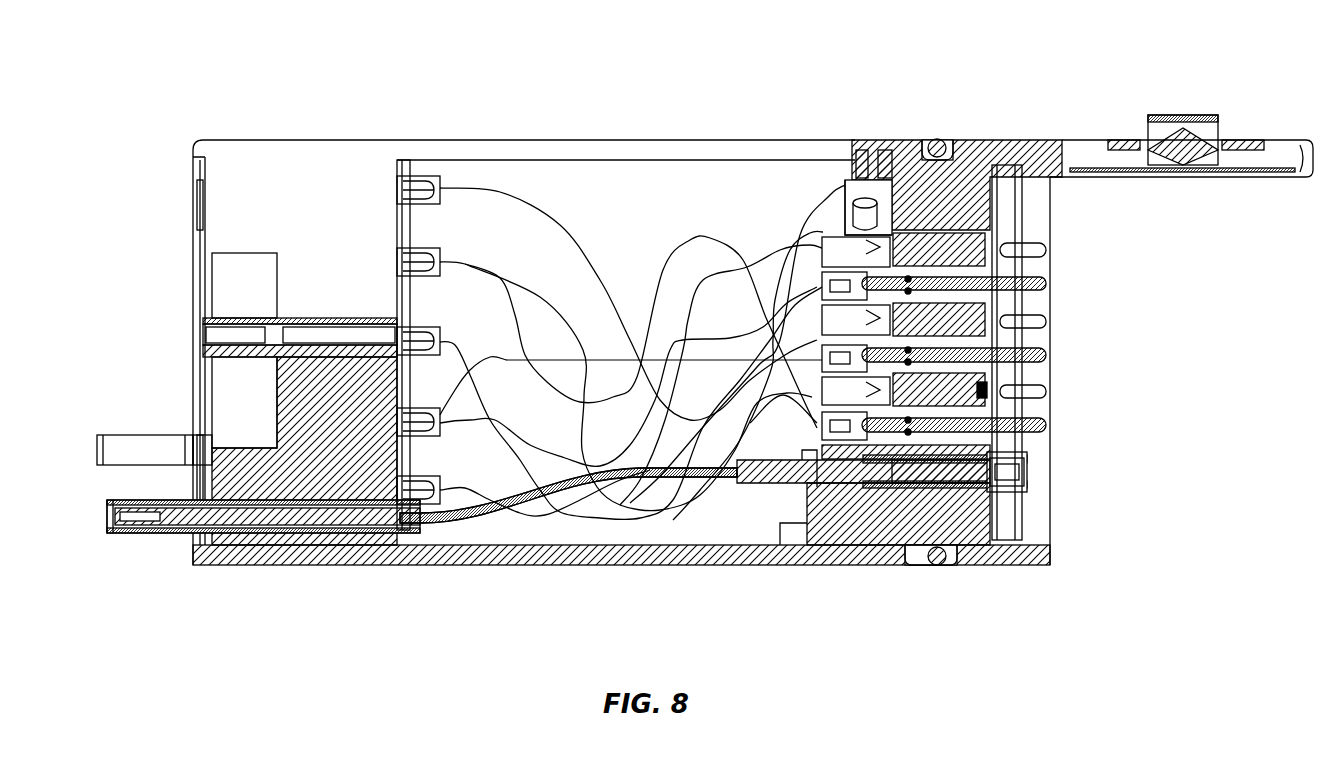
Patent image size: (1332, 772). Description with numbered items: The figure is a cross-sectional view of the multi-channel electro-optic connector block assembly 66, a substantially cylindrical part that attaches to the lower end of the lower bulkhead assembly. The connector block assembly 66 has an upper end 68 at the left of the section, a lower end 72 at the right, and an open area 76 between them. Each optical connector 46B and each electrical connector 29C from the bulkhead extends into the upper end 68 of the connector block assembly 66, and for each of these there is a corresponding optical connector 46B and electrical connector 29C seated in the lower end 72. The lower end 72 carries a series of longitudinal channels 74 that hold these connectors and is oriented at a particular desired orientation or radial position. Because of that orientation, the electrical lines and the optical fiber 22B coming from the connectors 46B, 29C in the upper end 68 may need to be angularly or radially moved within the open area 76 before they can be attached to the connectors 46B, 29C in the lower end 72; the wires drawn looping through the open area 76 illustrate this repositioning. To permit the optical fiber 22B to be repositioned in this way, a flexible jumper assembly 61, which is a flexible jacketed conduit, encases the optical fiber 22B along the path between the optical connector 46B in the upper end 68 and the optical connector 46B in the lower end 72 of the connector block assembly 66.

The connector block assembly 66 is at (192, 72).
The upper end 68 is at (306, 140).
The electrical connector 29C is at (425, 176).
The open area 76 is at (603, 197).
The lower end 72 is at (1035, 140).
The longitudinal channels 74 is at (938, 265).
The optical connector 46B is at (140, 533).
The optical fiber 22B is at (472, 520).
The flexible jumper assembly 61 is at (568, 536).